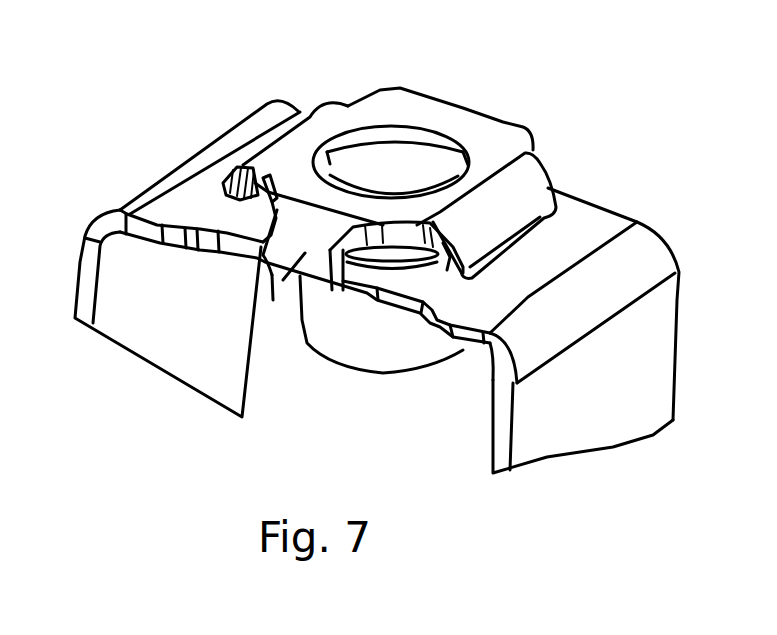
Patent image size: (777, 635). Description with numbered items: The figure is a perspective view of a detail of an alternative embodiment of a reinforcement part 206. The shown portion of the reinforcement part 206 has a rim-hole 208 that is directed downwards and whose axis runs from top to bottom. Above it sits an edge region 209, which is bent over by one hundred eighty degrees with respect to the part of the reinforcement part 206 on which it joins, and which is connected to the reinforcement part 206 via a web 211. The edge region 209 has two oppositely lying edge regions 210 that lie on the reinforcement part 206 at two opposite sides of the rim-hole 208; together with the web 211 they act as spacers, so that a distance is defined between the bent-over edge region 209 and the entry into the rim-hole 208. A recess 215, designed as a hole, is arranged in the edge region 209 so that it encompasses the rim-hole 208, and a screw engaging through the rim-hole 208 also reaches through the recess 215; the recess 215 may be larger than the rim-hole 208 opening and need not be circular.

The reinforcement part 206 is at (172, 153).
The rim-hole 208 is at (333, 337).
The edge region 209 is at (500, 138).
The edge regions 210 is at (281, 144).
The web 211 is at (273, 300).
The recess 215 is at (397, 156).